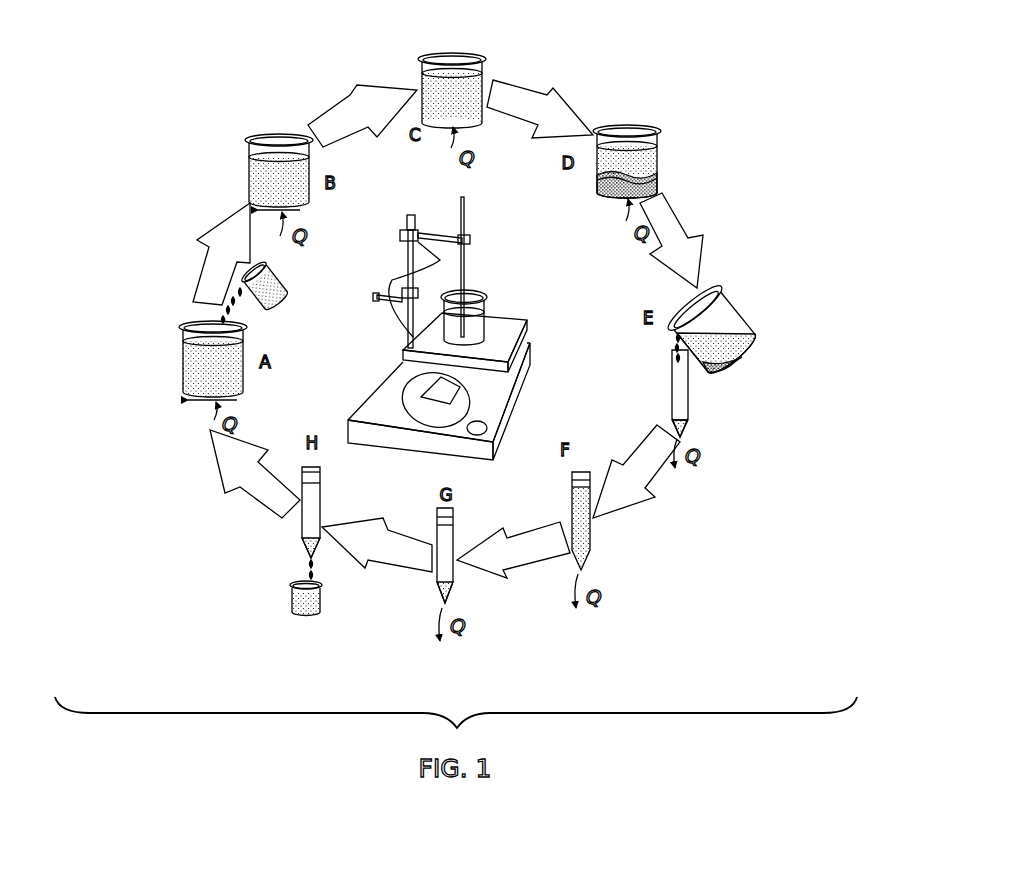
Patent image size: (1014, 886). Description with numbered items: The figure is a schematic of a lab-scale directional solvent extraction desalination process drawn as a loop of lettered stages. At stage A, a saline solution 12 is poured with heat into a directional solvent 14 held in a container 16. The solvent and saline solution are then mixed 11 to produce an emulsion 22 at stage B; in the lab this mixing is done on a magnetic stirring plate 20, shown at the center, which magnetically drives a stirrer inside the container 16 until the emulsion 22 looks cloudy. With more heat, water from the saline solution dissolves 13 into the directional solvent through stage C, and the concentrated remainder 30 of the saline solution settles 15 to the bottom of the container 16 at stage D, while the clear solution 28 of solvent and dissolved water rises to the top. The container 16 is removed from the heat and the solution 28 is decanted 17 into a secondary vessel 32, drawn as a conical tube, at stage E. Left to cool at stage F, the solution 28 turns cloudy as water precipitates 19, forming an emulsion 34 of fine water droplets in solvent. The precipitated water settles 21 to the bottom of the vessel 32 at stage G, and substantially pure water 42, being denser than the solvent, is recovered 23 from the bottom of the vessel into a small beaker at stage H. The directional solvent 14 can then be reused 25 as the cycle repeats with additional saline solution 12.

The mixing step 11 is at (212, 243).
The saline solution 12 is at (273, 292).
The dissolving step 13 is at (347, 112).
The directional solvent 14 is at (233, 373).
The settling step 15 is at (518, 98).
The container 16 is at (283, 136).
The decanting step 17 is at (678, 224).
The precipitation step 19 is at (652, 450).
The magnetic stirring plate 20 is at (512, 327).
The settling step 21 is at (518, 552).
The emulsion 22 is at (263, 174).
The recovery step 23 is at (400, 553).
The reuse step 25 is at (240, 467).
The solution 28 is at (647, 152).
The concentrated remainder 30 is at (657, 183).
The secondary vessel 32 is at (678, 390).
The emulsion 34 is at (590, 540).
The substantially pure water 42 is at (453, 592).